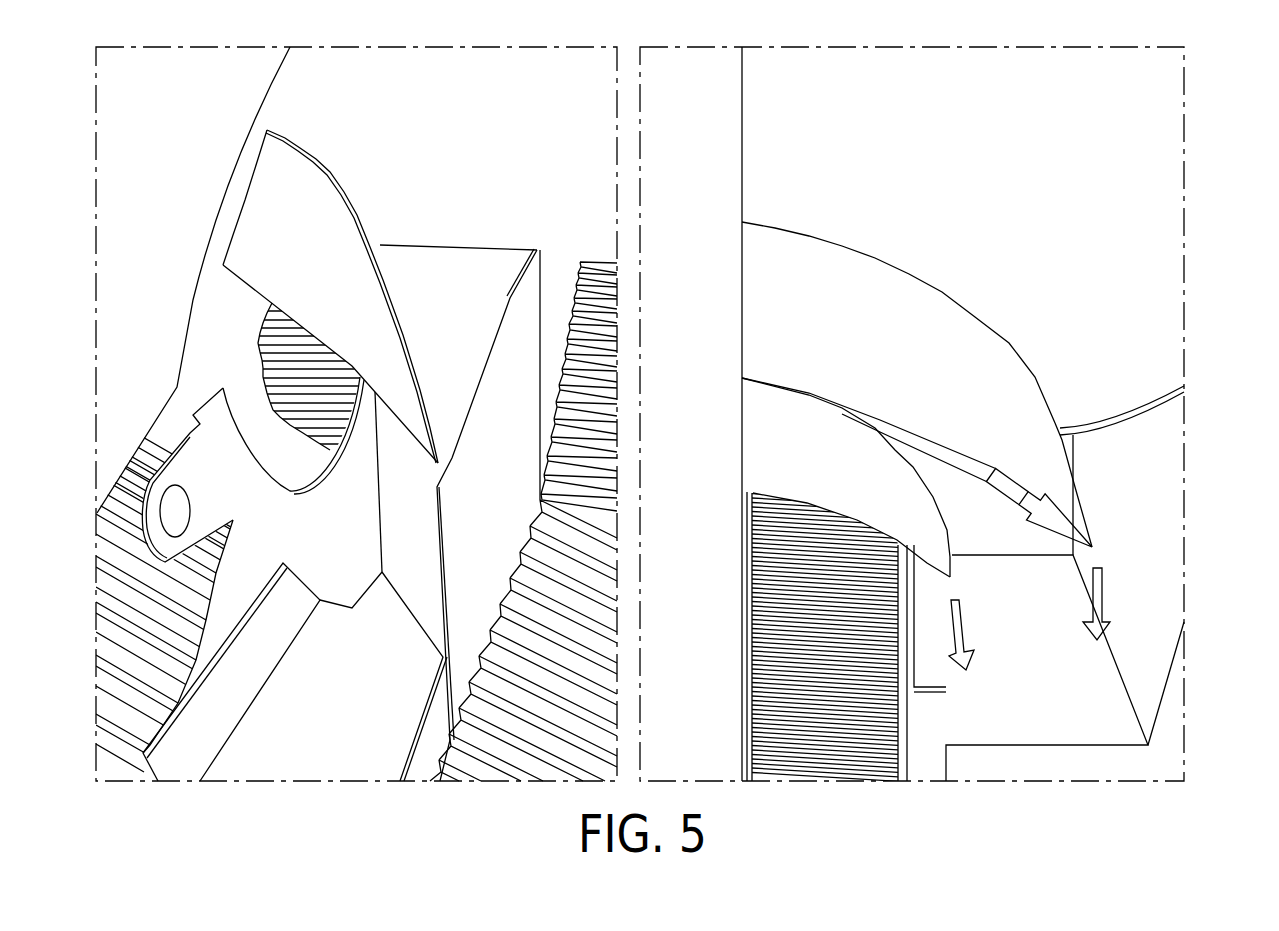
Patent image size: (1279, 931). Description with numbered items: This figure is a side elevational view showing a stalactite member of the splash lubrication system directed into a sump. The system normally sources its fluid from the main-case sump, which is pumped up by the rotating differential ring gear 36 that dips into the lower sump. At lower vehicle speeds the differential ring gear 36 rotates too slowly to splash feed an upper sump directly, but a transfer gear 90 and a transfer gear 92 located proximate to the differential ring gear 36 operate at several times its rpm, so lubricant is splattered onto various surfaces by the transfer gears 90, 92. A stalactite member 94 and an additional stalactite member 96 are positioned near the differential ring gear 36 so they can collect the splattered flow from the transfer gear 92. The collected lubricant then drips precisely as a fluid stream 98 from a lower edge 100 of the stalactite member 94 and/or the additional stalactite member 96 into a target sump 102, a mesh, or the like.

The differential ring gear 36 is at (752, 687).
The transfer gear 90 is at (122, 755).
The transfer gear 92 is at (512, 773).
The stalactite member 94 is at (343, 225).
The additional stalactite member 96 is at (900, 487).
The fluid stream 98 is at (1023, 490).
The lower edge 100 is at (1088, 532).
The target sump 102 is at (522, 330).